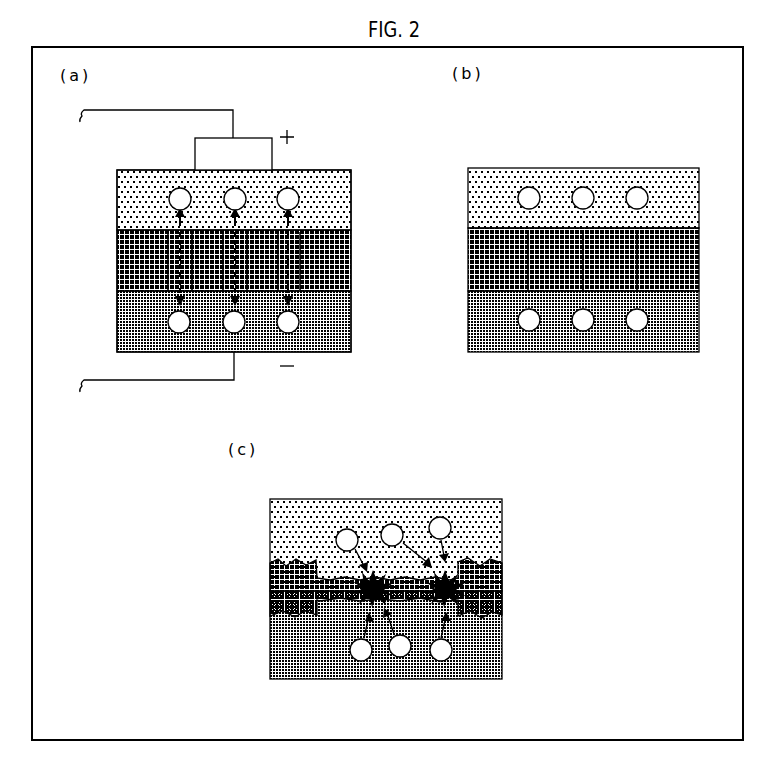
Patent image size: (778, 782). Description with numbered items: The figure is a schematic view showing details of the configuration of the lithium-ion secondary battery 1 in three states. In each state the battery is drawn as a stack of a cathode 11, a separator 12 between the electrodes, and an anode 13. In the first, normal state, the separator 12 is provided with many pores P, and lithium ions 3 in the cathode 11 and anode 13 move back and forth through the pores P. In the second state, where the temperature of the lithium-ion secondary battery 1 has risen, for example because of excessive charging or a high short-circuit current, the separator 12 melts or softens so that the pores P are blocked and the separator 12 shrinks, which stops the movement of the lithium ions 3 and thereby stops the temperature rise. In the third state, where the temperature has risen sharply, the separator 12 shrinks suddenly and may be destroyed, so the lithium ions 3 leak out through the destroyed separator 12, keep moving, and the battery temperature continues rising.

The lithium-ion secondary battery 1 is at (78, 170).
The cathode 11 is at (117, 199).
The separator 12 is at (117, 262).
The anode 13 is at (117, 322).
The lithium ions 3 is at (290, 190).
The pores P is at (292, 262).